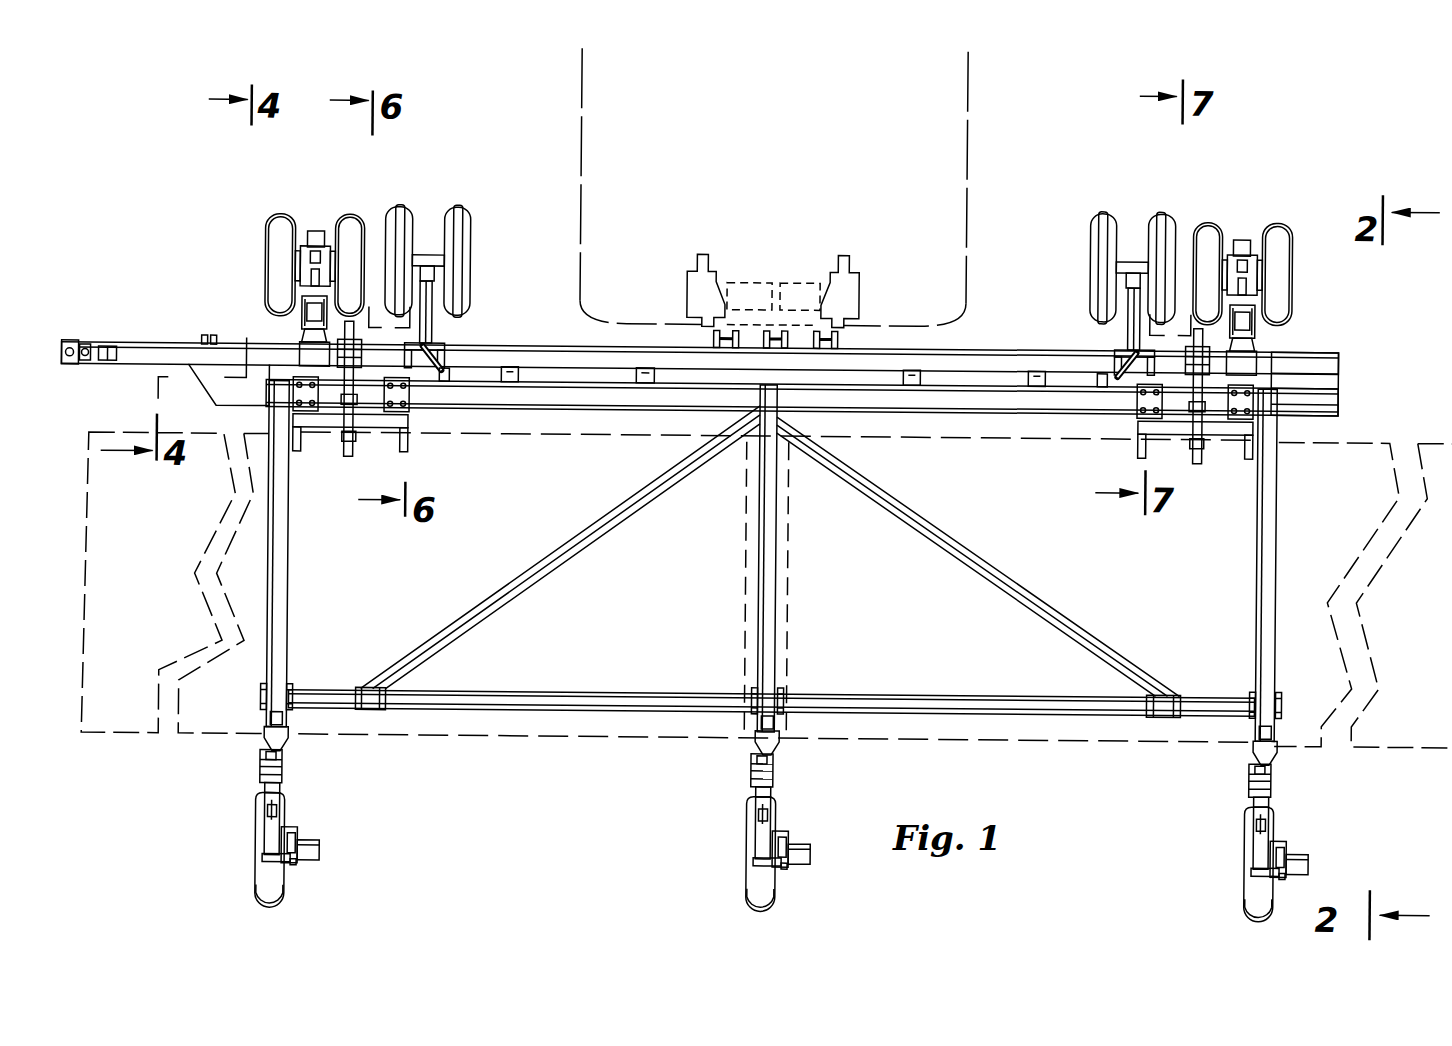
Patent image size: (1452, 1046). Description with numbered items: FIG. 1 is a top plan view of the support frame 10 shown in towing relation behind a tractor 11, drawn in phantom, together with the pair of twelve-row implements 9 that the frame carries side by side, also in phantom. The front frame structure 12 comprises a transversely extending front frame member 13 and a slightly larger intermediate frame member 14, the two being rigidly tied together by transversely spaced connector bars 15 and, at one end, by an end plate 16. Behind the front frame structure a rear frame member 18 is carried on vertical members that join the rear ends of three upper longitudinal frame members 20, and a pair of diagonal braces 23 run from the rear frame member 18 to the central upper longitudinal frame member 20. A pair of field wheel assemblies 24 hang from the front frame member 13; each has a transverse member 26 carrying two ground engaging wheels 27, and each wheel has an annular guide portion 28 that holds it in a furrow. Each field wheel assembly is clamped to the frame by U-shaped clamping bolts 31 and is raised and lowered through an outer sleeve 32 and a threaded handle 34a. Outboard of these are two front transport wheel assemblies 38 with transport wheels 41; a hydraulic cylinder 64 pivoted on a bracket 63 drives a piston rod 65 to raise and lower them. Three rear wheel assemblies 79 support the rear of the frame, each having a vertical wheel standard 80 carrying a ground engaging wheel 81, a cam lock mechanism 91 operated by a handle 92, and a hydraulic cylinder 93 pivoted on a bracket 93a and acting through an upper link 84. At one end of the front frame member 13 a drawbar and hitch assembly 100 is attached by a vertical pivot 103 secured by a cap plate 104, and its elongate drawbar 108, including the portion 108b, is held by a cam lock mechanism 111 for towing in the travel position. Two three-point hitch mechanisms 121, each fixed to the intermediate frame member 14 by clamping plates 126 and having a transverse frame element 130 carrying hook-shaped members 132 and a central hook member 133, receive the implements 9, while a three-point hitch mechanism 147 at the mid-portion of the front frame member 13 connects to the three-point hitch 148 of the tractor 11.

The implements 9 is at (134, 746).
The support frame 10 is at (183, 242).
The tractor 11 is at (992, 80).
The front frame structure 12 is at (558, 345).
The front frame member 13 is at (605, 341).
The intermediate frame member 14 is at (613, 411).
The connector bars 15 is at (512, 384).
The end plate 16 is at (1338, 380).
The rear frame member 18 is at (516, 712).
The upper longitudinal frame members 20 is at (288, 578).
The diagonal brace 23 is at (484, 610).
The field wheel assemblies 24 is at (437, 203).
The transverse member 26 is at (426, 257).
The ground engaging wheels 27 is at (390, 226).
The guide portion 28 is at (410, 204).
The link 31 is at (445, 375).
The outer sleeve 32 is at (432, 321).
The handle 34a is at (445, 384).
The front transport wheel assemblies 38 is at (312, 204).
The transport wheels 41 is at (263, 234).
The bracket 63 is at (305, 348).
The hydraulic cylinder 64 is at (300, 316).
The piston rod 65 is at (298, 286).
The rear wheel assemblies 79 is at (258, 898).
The vertical wheel standard 80 is at (322, 856).
The ground engaging wheel 81 is at (276, 908).
The upper link 84 is at (258, 827).
The cam lock mechanism 91 is at (302, 839).
The handle 92 is at (297, 868).
The hydraulic cylinder 93 is at (284, 775).
The bracket 93a is at (266, 769).
The drawbar and hitch assembly 100 is at (88, 339).
The vertical pivot 103 is at (82, 367).
The cap plate 104 is at (95, 367).
The drawbar 108 is at (95, 339).
The bolts 108b is at (203, 340).
The cam lock mechanism 111 is at (118, 351).
The three-point hitch mechanisms 121 is at (345, 463).
The clamping plates 126 is at (398, 403).
The transverse frame element 130 is at (378, 435).
The hook-shaped member 132 is at (297, 441).
The central hook member 133 is at (350, 451).
The three-point hitch mechanism 147 is at (840, 333).
The three-point hitch 148 is at (716, 300).